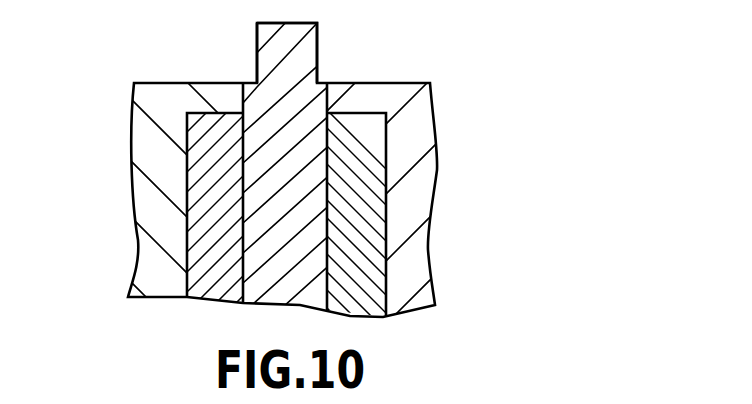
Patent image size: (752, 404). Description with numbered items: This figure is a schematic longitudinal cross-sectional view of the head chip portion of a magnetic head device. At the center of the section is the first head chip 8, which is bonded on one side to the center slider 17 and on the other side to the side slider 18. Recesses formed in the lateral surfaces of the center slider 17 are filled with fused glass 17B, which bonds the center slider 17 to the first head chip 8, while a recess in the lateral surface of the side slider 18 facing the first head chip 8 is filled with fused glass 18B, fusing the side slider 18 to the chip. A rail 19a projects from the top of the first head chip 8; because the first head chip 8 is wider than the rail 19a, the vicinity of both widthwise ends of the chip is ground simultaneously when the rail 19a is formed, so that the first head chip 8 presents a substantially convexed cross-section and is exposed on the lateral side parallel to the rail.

The center slider 17 is at (148, 145).
The fused glass 17B is at (207, 206).
The side slider 18 is at (420, 118).
The fused glass 18B is at (370, 218).
The first head chip 8 is at (313, 265).
The rail 19a is at (307, 50).